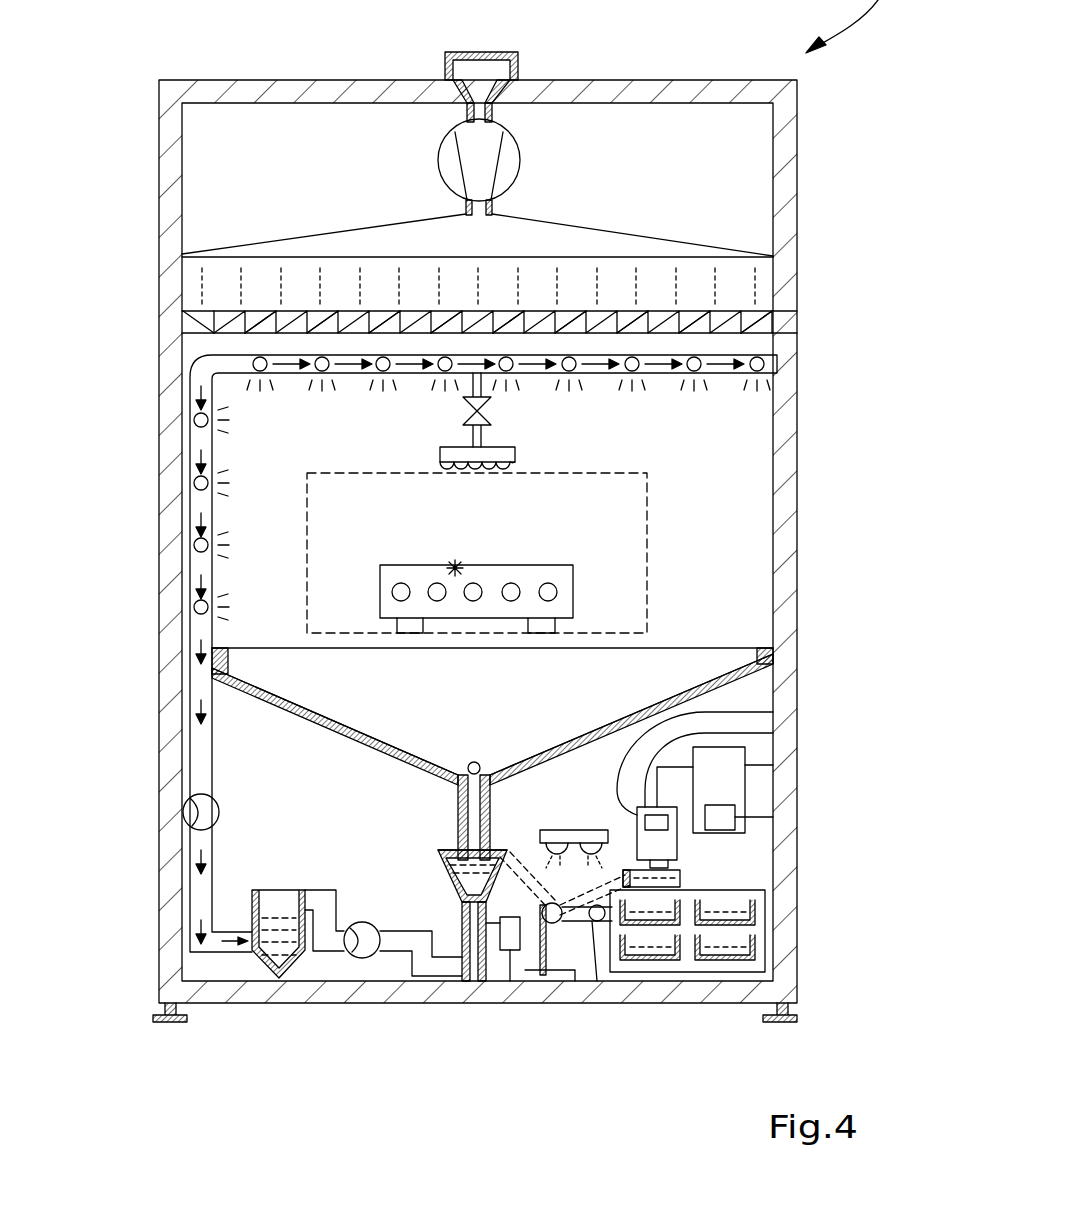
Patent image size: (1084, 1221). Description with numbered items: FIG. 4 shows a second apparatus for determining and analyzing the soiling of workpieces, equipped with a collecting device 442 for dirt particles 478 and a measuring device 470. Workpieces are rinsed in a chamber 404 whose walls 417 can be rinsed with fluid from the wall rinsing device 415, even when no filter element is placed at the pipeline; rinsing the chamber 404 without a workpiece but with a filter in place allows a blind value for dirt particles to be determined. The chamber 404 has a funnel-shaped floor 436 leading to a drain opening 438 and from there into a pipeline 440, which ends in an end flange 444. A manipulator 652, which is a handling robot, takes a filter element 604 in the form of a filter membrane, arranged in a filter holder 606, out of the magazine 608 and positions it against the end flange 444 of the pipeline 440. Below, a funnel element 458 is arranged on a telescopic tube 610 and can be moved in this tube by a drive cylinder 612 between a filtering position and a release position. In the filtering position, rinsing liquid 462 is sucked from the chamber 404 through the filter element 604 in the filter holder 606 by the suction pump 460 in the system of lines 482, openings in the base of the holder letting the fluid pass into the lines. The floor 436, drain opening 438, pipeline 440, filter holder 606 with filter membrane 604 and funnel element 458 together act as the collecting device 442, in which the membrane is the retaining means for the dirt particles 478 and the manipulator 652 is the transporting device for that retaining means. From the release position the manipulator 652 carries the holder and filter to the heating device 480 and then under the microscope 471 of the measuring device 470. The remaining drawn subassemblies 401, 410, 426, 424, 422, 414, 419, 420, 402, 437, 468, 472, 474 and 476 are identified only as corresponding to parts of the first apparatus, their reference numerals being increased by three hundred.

The housing 401 is at (476, 551).
The casing wall 410 is at (797, 420).
The inlet 426 is at (445, 58).
The distributor 424 is at (520, 160).
The filter 422 is at (762, 288).
The nozzles 414 is at (372, 380).
The rinsing liquid 462 is at (318, 392).
The valve 419 is at (463, 411).
The wall rinsing device 415 is at (440, 462).
The chamber 404 is at (748, 500).
The treatment zone 420 is at (650, 552).
The article carrier 402 is at (530, 565).
The dirt particles 478 is at (455, 560).
The walls 417 is at (172, 583).
The seal 437 is at (222, 672).
The funnel-shaped floor 436 is at (602, 724).
The drain opening 438 is at (462, 778).
The pipeline 440 is at (458, 832).
The inlet opening 468 is at (440, 858).
The funnel element 458 is at (427, 876).
The collecting device 442 is at (395, 832).
The system of lines 482 is at (200, 740).
The heating device 480 is at (575, 830).
The end flange 444 is at (508, 870).
The line 472 is at (775, 712).
The microscope 471 is at (775, 733).
The control unit 474 is at (775, 765).
The display 476 is at (774, 814).
The measuring device 470 is at (761, 775).
The magazine 608 is at (729, 953).
The filter holder 606 is at (773, 946).
The filter element 604 is at (722, 893).
The manipulator 652 is at (585, 925).
The drive cylinder 612 is at (535, 981).
The telescopic tube 610 is at (468, 983).
The suction pump 460 is at (362, 958).